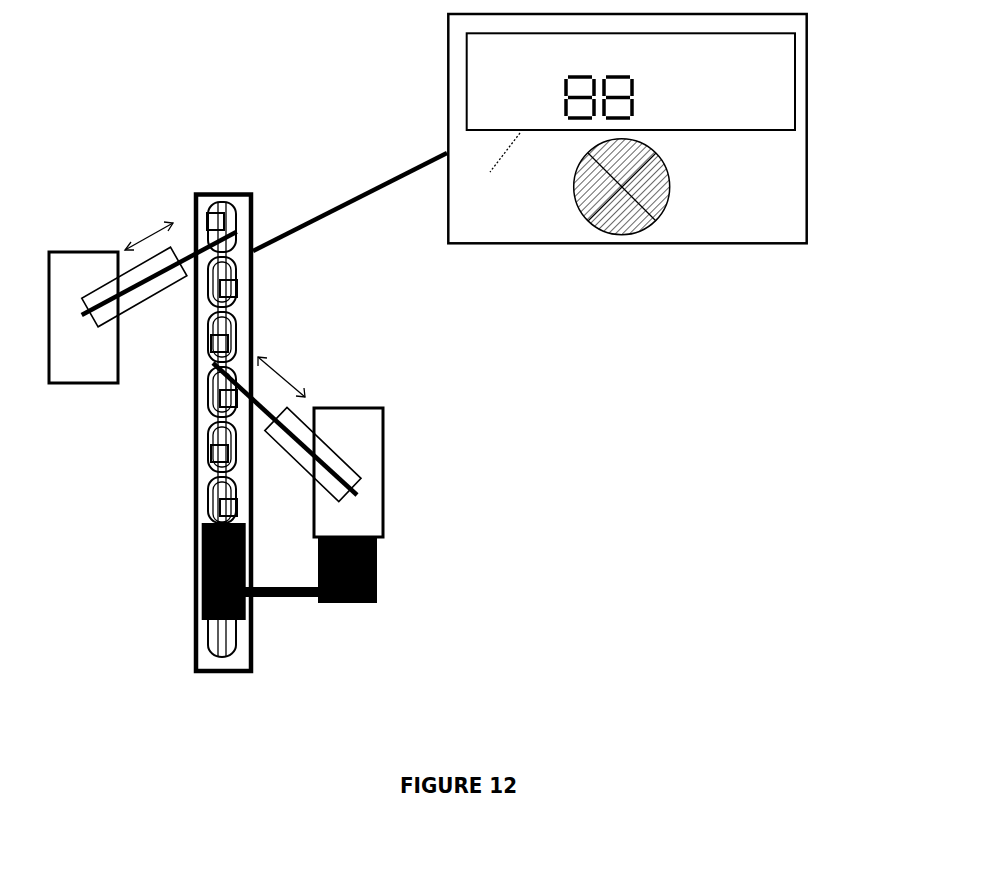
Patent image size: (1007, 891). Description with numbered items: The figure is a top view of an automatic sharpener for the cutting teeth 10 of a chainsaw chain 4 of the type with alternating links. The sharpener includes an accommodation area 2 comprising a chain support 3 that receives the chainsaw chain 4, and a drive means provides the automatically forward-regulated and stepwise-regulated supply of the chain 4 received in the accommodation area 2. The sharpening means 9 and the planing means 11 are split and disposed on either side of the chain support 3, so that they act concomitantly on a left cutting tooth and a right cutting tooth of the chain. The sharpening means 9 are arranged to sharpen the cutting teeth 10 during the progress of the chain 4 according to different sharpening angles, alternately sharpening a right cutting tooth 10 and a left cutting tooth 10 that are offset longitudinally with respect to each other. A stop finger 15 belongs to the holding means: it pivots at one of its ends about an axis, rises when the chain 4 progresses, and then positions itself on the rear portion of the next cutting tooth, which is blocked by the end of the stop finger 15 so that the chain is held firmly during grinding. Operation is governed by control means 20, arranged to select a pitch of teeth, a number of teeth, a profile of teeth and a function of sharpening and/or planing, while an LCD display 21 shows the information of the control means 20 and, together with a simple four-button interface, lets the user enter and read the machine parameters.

The accommodation area 2 is at (196, 180).
The chain support 3 is at (237, 192).
The chainsaw chain 4 is at (215, 415).
The sharpening means 9 is at (185, 272).
The cutting teeth 10 is at (240, 292).
The planing means 11 is at (148, 295).
The stop finger 15 is at (201, 560).
The control means 20 is at (680, 245).
The LCD display 21 is at (773, 110).